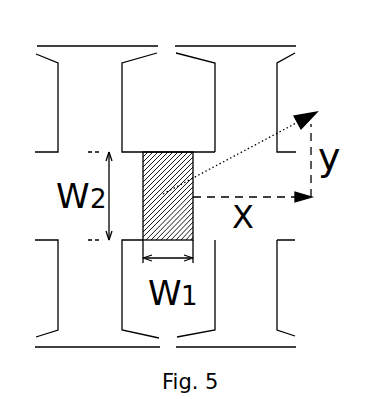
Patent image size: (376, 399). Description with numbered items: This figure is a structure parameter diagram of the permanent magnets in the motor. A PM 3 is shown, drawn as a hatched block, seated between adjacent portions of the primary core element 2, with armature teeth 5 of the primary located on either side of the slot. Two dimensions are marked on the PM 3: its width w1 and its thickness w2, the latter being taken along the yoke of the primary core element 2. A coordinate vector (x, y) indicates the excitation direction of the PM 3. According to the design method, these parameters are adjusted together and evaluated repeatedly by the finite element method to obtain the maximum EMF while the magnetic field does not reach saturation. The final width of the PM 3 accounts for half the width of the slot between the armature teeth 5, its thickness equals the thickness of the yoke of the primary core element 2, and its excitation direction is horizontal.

The primary core element 2 is at (88, 83).
The PM 3 is at (150, 170).
The armature teeth 5 is at (373, 384).